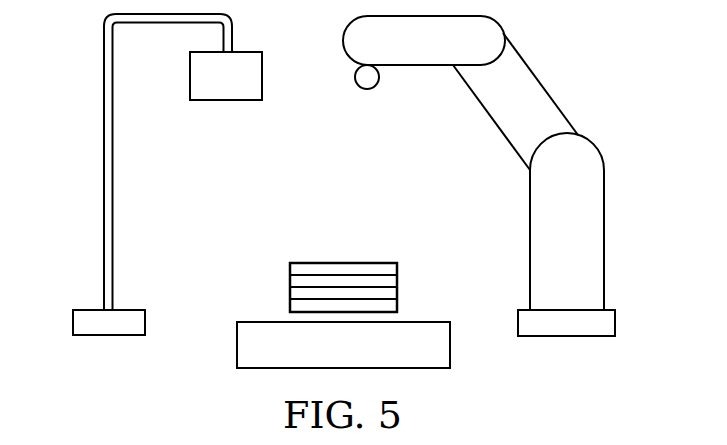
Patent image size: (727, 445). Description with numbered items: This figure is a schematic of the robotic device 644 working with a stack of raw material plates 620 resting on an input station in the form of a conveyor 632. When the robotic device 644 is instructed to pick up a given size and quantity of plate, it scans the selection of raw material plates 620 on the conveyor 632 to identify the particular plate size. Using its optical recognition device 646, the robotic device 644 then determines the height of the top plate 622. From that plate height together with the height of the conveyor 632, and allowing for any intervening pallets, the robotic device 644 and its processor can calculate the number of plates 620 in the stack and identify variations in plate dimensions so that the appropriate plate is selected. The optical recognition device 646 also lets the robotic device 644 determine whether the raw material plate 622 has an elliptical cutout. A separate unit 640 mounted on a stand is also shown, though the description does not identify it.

The raw material plates 620 is at (274, 259).
The top plate 622 is at (417, 275).
The conveyor 632 is at (237, 345).
The camera 640 is at (225, 101).
The robotic device 644 is at (532, 68).
The optical recognition device 646 is at (375, 88).